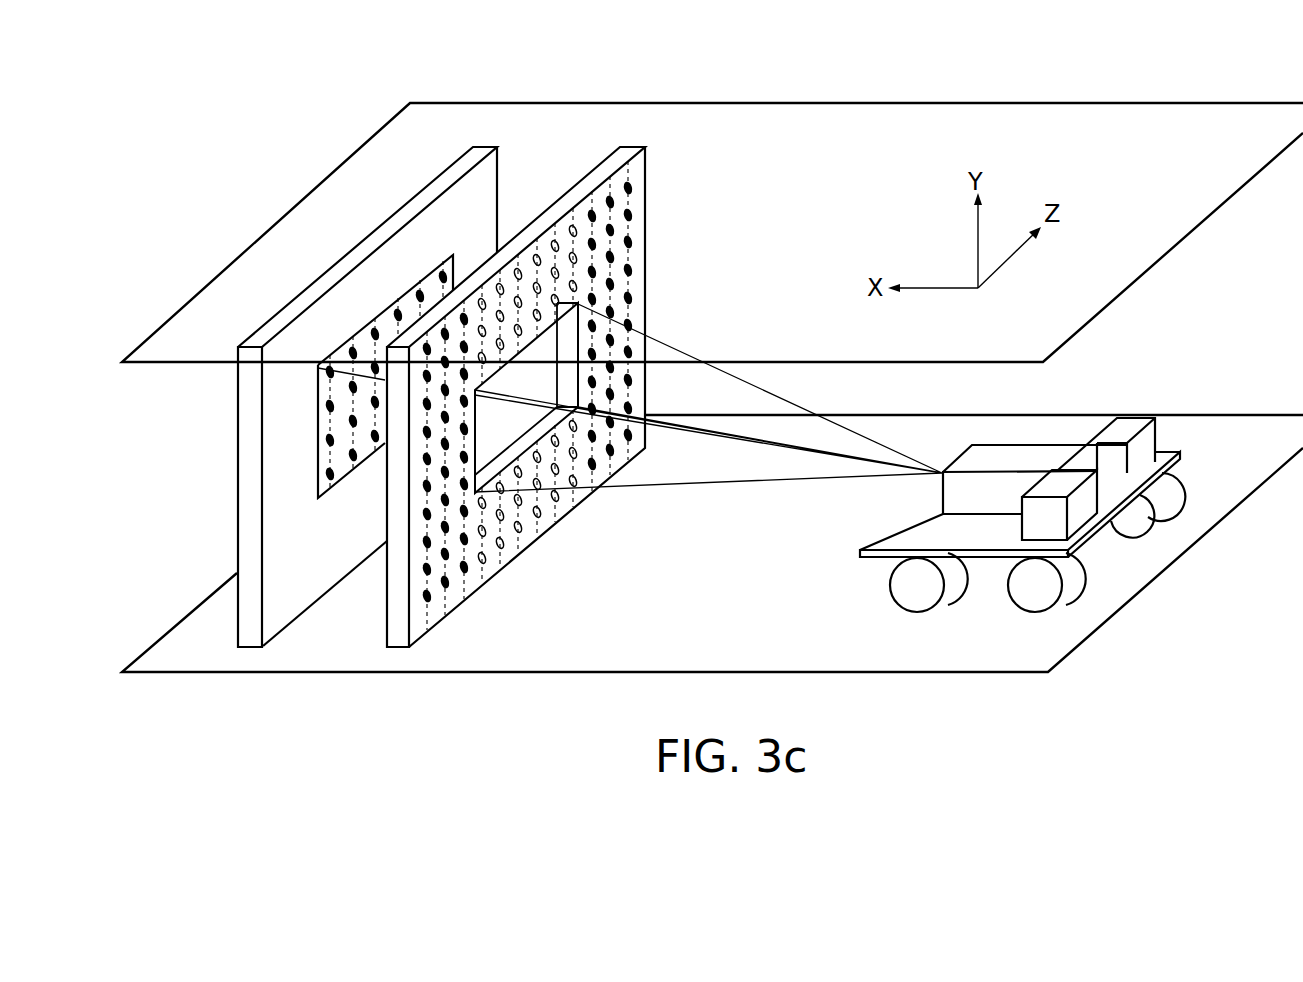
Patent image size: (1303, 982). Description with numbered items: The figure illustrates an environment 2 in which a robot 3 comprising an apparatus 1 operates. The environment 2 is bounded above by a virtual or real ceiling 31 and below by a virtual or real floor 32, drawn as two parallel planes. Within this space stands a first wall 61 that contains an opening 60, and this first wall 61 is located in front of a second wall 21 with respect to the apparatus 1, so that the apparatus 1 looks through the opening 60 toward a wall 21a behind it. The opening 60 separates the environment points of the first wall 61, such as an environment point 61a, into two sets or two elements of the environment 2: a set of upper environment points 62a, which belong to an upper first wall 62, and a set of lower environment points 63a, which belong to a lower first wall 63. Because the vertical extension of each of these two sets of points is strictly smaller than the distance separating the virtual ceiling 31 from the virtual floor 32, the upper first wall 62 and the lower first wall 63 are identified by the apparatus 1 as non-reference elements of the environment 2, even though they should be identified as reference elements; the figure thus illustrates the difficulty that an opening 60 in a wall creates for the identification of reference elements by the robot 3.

The apparatus 1 is at (1035, 455).
The environment 2 is at (707, 365).
The robot 3 is at (1035, 472).
The second wall 21 is at (452, 173).
The wall 21a is at (318, 443).
The virtual or real ceiling 31 is at (283, 218).
The virtual or real floor 32 is at (153, 643).
The opening 60 is at (564, 380).
The first wall 61 is at (571, 414).
The environment point of the first wall 61a is at (632, 217).
The upper first wall 62 is at (537, 239).
The upper environment points of the first wall 62a is at (576, 228).
The lower first wall 63 is at (570, 505).
The lower environment points of the first wall 63a is at (580, 452).